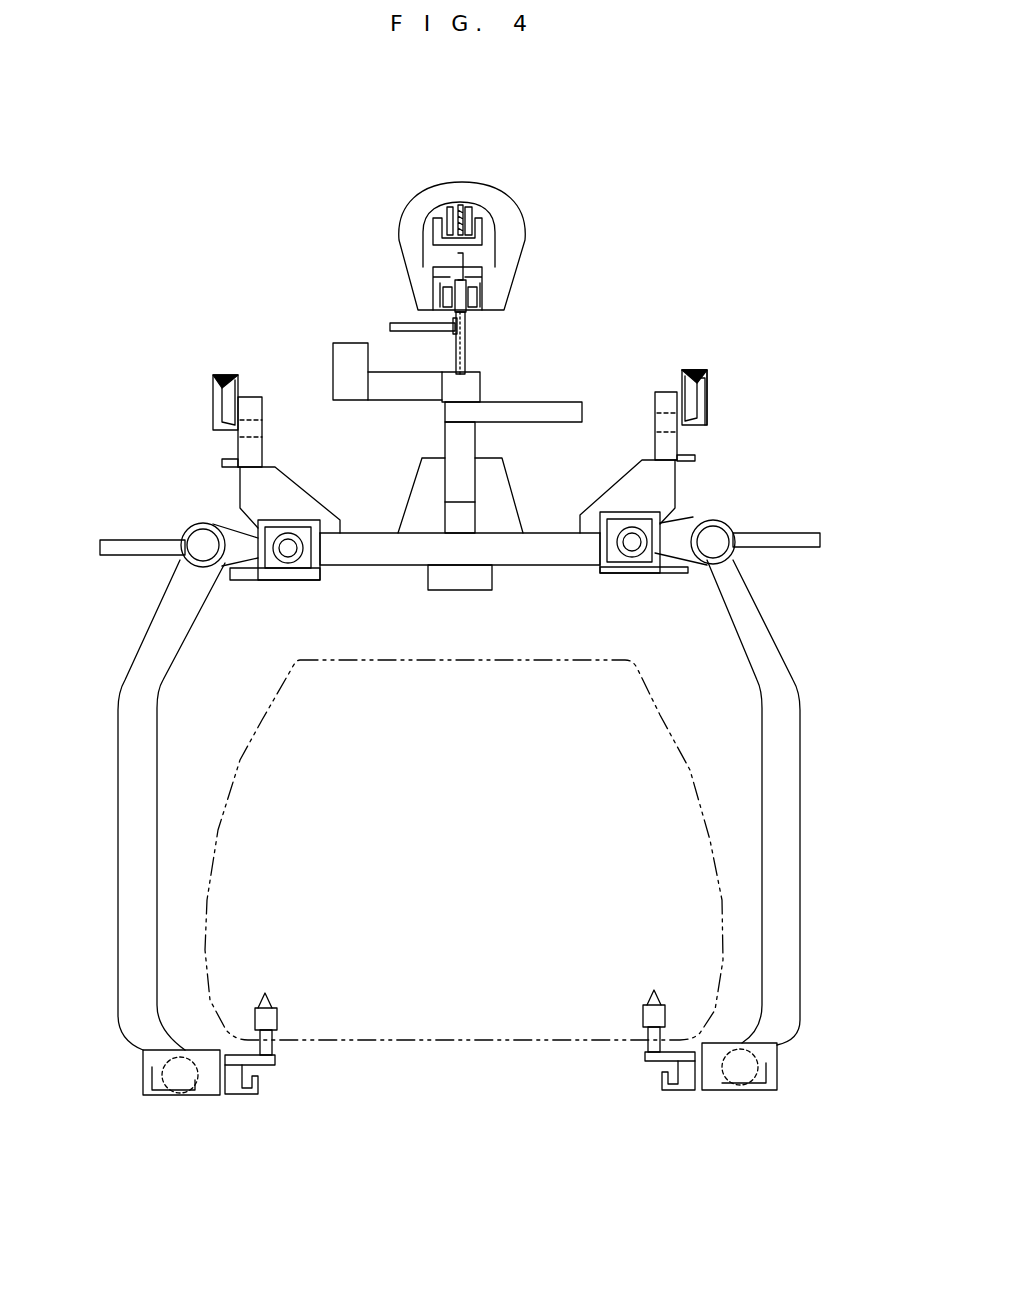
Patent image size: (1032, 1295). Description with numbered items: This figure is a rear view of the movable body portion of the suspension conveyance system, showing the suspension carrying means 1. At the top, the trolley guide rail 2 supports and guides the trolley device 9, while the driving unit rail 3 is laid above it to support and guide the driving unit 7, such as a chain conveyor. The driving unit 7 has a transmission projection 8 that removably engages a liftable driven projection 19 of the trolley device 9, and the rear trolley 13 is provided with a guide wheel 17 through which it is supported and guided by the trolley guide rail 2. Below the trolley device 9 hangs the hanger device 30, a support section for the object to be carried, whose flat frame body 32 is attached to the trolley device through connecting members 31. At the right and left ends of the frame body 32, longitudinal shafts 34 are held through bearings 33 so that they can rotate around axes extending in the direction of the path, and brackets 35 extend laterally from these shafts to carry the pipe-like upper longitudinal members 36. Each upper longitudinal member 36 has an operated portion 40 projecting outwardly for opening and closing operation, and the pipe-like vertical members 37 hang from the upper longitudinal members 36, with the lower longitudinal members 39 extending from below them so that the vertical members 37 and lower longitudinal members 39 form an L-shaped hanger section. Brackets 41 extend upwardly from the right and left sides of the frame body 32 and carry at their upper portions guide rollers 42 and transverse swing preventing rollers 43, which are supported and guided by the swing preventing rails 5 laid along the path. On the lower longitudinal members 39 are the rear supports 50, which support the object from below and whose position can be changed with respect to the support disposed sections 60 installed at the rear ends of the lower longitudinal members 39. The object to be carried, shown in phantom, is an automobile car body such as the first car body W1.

The suspension carrying means 1 is at (649, 212).
The trolley guide rail 2 is at (487, 277).
The driving unit rail 3 is at (458, 200).
The swing preventing rail 5 is at (700, 378).
The driving unit 7 is at (492, 216).
The transmission projection 8 is at (478, 258).
The trolley device 9 is at (490, 376).
The rear trolley 13 is at (470, 296).
The guide wheel 17 is at (445, 296).
The driven projection 19 is at (455, 256).
The hanger device 30 is at (556, 523).
The connecting member 31 is at (445, 440).
The frame body 32 is at (382, 548).
The bearing 33 is at (268, 572).
The longitudinal shaft 34 is at (290, 553).
The bracket 35 is at (245, 525).
The upper longitudinal member 36 is at (203, 545).
The vertical member 37 is at (782, 828).
The lower longitudinal member 39 is at (753, 1058).
The operated portion 40 is at (778, 545).
The bracket 41 is at (670, 493).
The guide roller 42 is at (215, 400).
The transverse swing preventing roller 43 is at (692, 428).
The rear support 50 is at (288, 1010).
The support disposed section 60 is at (232, 1105).
The first car body W1 is at (668, 716).